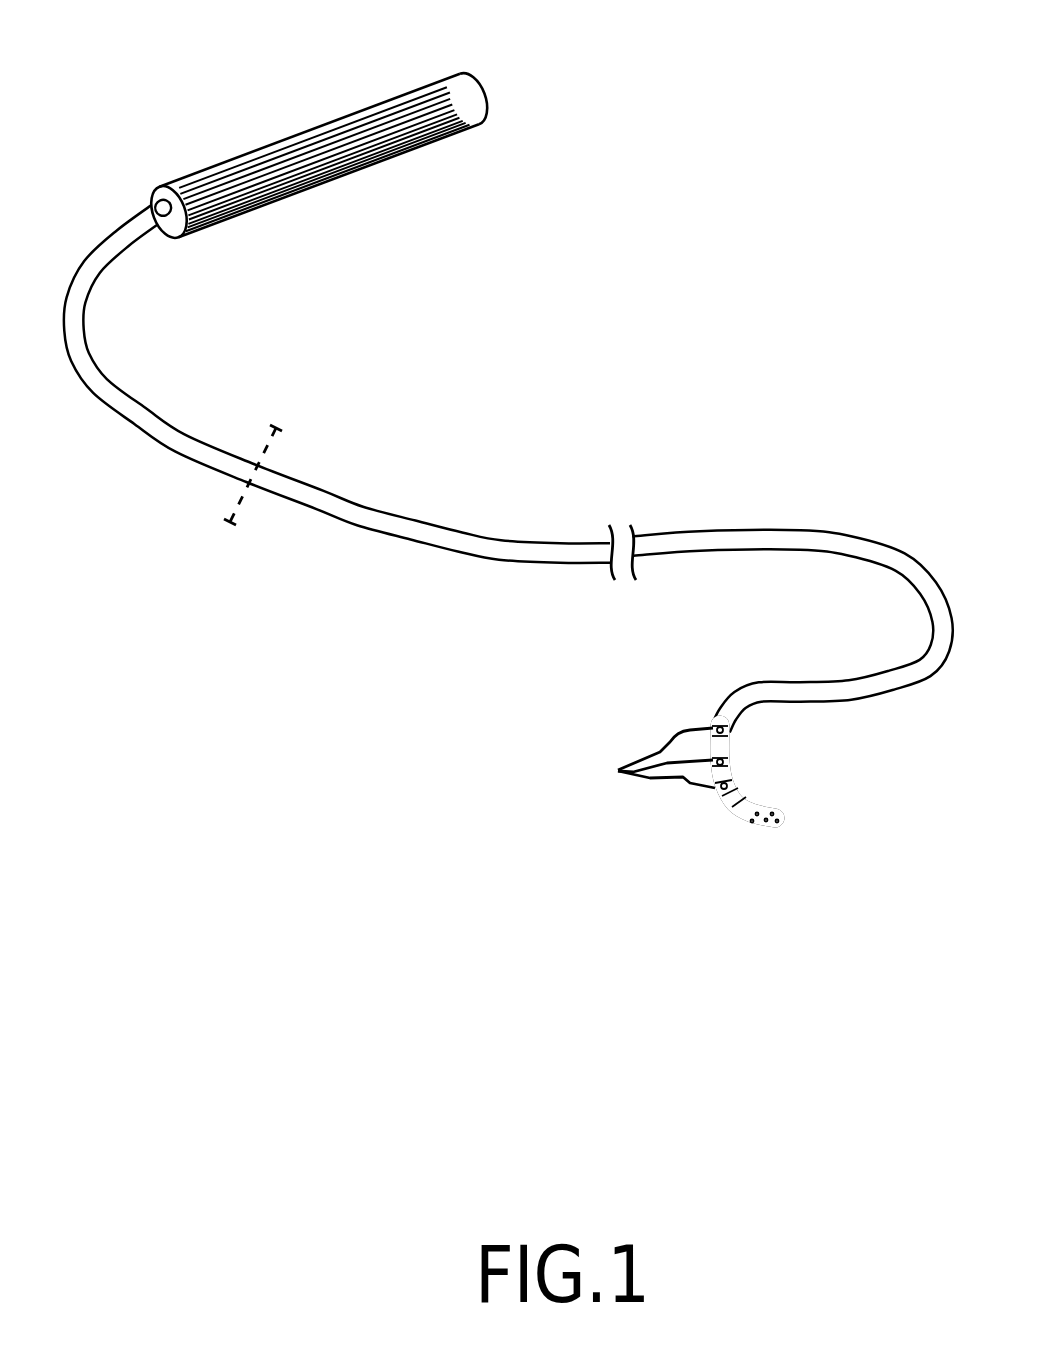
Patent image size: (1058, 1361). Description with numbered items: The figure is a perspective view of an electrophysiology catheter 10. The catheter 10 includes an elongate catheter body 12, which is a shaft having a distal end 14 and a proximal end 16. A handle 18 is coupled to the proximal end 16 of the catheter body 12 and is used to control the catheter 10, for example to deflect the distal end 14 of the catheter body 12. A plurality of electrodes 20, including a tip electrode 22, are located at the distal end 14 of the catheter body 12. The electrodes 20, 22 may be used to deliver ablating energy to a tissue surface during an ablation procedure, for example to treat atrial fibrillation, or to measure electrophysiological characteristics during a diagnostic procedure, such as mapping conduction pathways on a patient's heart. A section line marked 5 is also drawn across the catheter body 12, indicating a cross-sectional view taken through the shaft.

The electrophysiology catheter 10 is at (630, 318).
The catheter body 12 is at (408, 538).
The distal end 14 is at (862, 761).
The proximal end 16 is at (313, 121).
The handle 18 is at (468, 130).
The electrodes 20 is at (619, 770).
The tip electrode 22 is at (767, 830).
The section line 5 is at (280, 436).